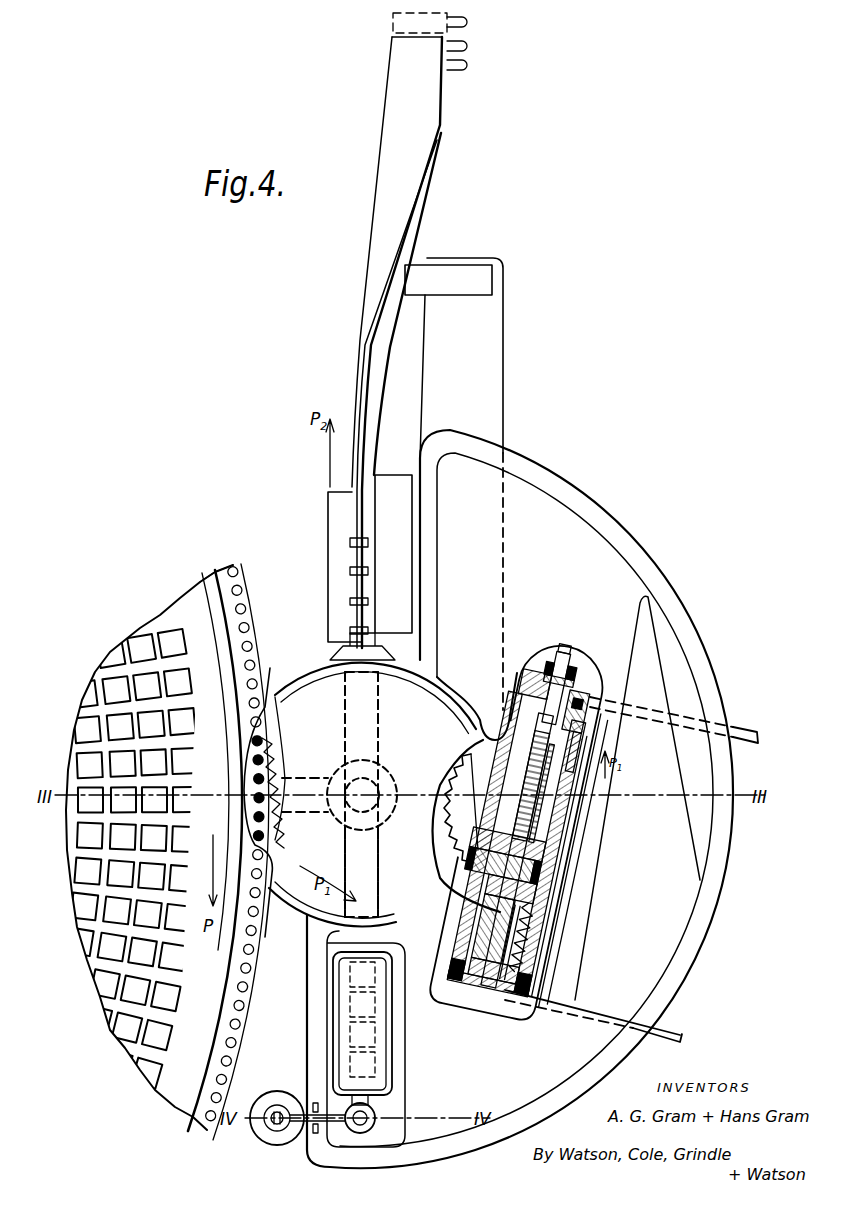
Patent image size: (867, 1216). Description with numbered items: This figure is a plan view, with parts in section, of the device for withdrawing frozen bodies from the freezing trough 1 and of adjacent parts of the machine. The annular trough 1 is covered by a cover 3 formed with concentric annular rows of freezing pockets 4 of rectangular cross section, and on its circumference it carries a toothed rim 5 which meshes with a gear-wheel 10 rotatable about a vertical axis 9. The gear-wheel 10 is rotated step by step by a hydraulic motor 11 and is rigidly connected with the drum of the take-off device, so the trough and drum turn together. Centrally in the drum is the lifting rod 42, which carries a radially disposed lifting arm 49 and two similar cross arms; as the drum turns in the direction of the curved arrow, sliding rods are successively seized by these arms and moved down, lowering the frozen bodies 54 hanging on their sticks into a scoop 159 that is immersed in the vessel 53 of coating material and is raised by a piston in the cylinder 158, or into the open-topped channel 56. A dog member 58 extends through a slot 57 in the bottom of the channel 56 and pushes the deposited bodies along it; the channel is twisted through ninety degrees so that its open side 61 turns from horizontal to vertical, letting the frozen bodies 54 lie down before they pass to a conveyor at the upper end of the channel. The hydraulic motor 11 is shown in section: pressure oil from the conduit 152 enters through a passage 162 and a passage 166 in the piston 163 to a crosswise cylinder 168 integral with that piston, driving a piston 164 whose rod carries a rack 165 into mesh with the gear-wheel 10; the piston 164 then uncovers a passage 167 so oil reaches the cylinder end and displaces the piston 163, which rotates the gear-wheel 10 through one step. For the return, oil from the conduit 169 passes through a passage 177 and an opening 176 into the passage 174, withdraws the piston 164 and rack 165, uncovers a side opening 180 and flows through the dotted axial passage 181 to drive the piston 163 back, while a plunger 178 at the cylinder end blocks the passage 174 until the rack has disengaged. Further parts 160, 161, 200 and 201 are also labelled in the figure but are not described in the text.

The trough 1 is at (200, 583).
The cover 3 is at (183, 601).
The freezing pockets 4 is at (140, 648).
The toothed rim 5 is at (233, 1064).
The vertical axis 9 is at (352, 788).
The gear-wheel 10 is at (269, 690).
The hydraulic motor 11 is at (585, 748).
The lifting rod 42 is at (368, 783).
The lifting arm 49 is at (302, 805).
The vessel 53 is at (540, 508).
The frozen bodies 54 is at (396, 22).
The channel 56 is at (370, 388).
The slot 57 is at (358, 514).
The dog member 58 is at (357, 631).
The open side 61 is at (380, 343).
The conduit 152 is at (664, 1043).
The cylinder 158 is at (292, 1096).
The scoop 159 is at (333, 1004).
The wheel 160 is at (312, 1126).
The shaft 161 is at (266, 1126).
The passage 162 is at (516, 960).
The piston 163 is at (478, 1004).
The piston 164 is at (530, 850).
The coupling member 165 is at (463, 821).
The passage 166 is at (536, 924).
The passage 167 is at (540, 904).
The cylinder 168 is at (530, 868).
The conduit 169 is at (736, 738).
The passage 174 is at (575, 783).
The opening 176 is at (580, 745).
The passage 177 is at (560, 705).
The plunger 178 is at (548, 690).
The side opening 180 is at (538, 826).
The axial passage 181 is at (514, 781).
The pocket 200 is at (455, 948).
The housing 201 is at (452, 1012).